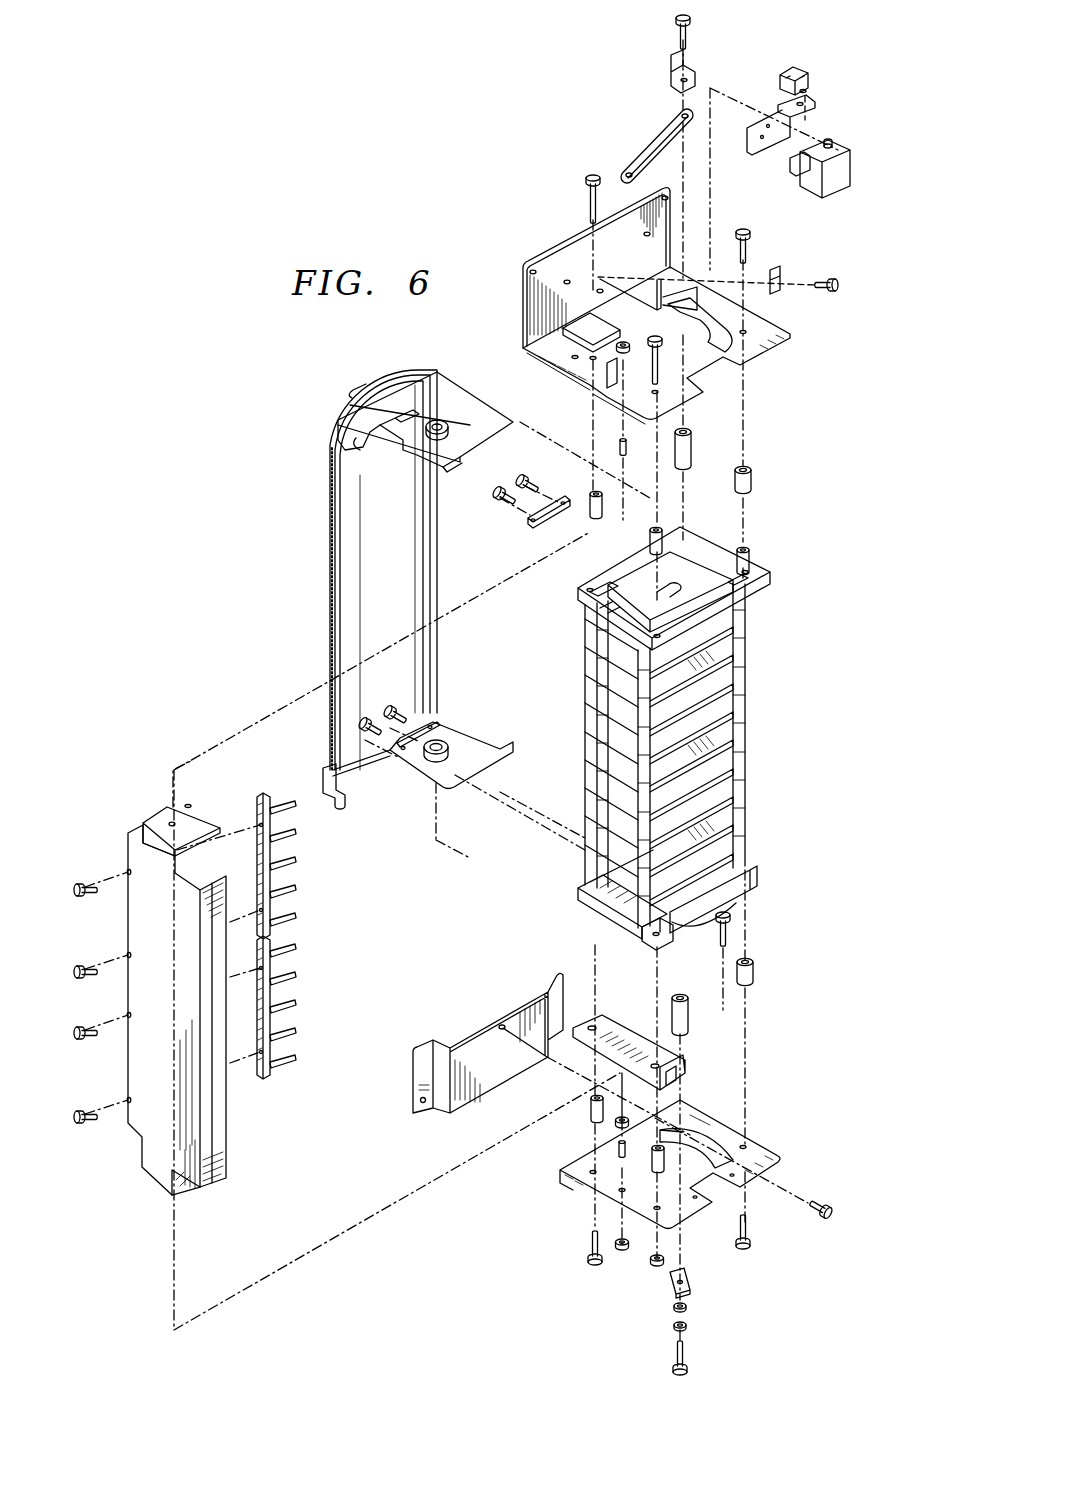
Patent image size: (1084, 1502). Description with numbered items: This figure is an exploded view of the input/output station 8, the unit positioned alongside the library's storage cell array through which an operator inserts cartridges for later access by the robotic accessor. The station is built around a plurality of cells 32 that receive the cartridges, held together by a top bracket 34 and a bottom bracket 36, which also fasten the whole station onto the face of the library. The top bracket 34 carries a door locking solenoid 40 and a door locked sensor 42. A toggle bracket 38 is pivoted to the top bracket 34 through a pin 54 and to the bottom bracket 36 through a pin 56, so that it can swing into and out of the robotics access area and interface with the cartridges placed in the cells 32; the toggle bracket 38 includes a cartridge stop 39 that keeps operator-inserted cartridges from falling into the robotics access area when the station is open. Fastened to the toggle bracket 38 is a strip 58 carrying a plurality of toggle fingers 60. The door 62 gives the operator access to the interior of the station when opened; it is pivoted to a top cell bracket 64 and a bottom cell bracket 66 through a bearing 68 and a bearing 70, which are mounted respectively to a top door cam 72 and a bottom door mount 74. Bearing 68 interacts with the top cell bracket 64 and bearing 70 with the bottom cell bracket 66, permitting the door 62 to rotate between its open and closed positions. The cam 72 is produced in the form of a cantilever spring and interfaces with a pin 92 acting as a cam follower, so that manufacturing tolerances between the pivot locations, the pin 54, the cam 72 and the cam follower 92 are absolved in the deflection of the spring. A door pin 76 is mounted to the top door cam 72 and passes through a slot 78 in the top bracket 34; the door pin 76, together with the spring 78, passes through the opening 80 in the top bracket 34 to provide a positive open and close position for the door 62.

The input/output station 8 is at (203, 565).
The cells 32 is at (722, 666).
The top bracket 34 is at (568, 258).
The bottom bracket 36 is at (412, 1076).
The toggle bracket 38 is at (130, 920).
The cartridge stop 39 is at (220, 1110).
The door locking solenoid 40 is at (840, 143).
The door locked sensor 42 is at (790, 66).
The pin 54 is at (621, 445).
The pin 56 is at (622, 1160).
The strip 58 is at (263, 846).
The toggle fingers 60 is at (298, 914).
The door 62 is at (430, 551).
The top cell bracket 64 is at (696, 530).
The bottom cell bracket 66 is at (592, 903).
The bearing 68 is at (441, 420).
The bearing 70 is at (442, 745).
The top door cam 72 is at (417, 455).
The bottom door mount 74 is at (495, 752).
The door pin 76 is at (692, 452).
The slot / spring 78 is at (652, 149).
The opening 80 is at (735, 343).
The pin / cam follower 92 is at (187, 804).